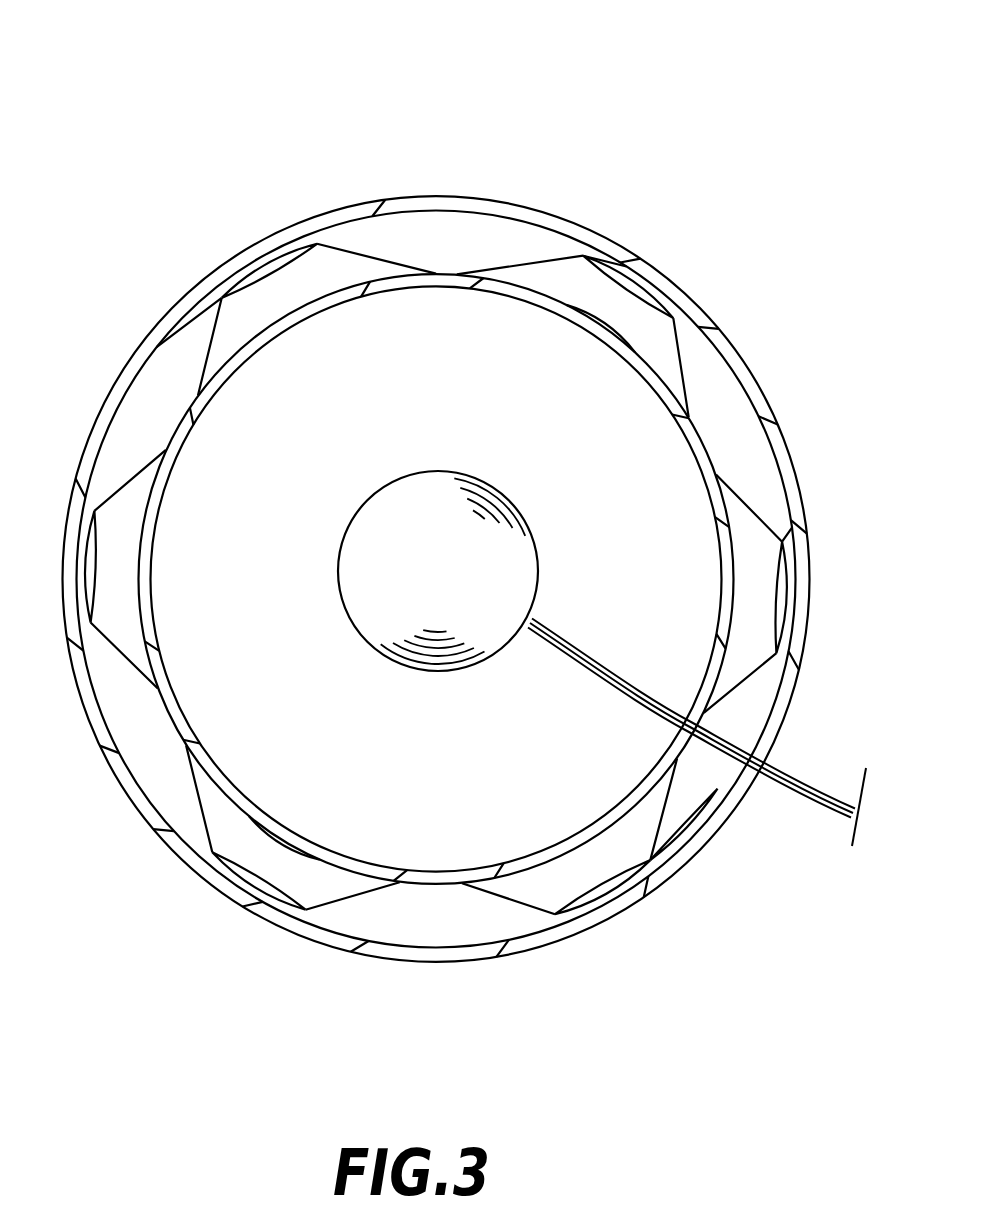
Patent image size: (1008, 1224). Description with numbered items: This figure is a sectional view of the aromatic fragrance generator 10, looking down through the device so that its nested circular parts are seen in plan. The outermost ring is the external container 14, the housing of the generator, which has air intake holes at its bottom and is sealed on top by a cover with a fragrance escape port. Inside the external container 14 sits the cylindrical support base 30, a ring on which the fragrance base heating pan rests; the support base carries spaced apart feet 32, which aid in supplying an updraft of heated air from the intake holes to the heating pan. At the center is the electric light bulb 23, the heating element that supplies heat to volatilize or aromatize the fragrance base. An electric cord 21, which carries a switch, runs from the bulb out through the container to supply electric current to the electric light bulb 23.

The aromatic fragrance generator 10 is at (480, 482).
The external container 14 is at (523, 212).
The cylindrical support base 30 is at (447, 288).
The feet 32 is at (758, 567).
The electric light bulb 23 is at (413, 583).
The electric cord 21 is at (815, 795).